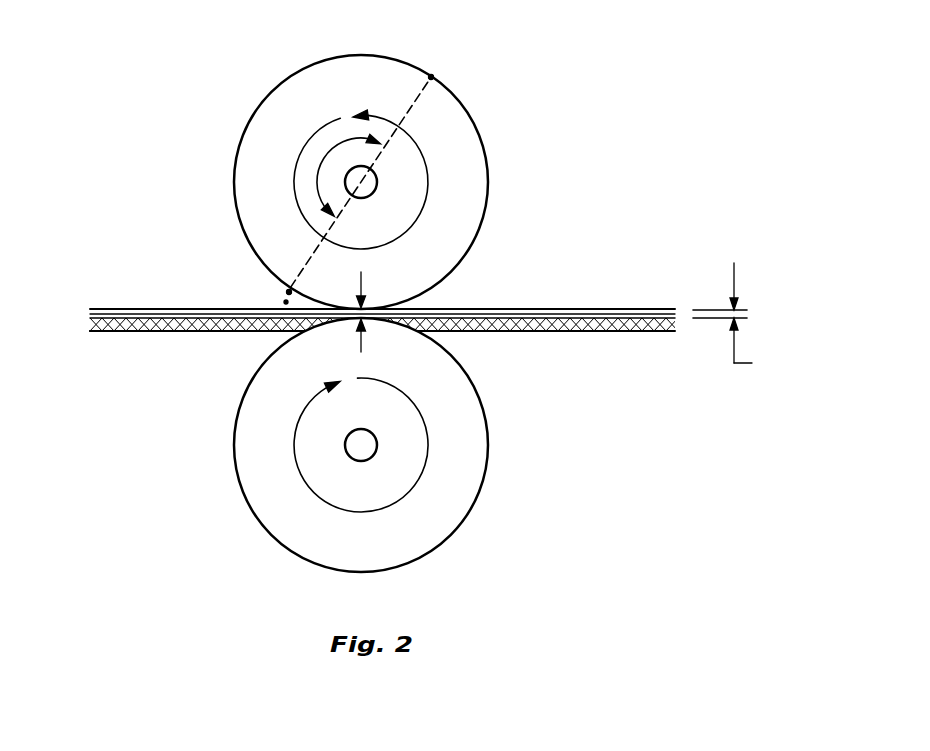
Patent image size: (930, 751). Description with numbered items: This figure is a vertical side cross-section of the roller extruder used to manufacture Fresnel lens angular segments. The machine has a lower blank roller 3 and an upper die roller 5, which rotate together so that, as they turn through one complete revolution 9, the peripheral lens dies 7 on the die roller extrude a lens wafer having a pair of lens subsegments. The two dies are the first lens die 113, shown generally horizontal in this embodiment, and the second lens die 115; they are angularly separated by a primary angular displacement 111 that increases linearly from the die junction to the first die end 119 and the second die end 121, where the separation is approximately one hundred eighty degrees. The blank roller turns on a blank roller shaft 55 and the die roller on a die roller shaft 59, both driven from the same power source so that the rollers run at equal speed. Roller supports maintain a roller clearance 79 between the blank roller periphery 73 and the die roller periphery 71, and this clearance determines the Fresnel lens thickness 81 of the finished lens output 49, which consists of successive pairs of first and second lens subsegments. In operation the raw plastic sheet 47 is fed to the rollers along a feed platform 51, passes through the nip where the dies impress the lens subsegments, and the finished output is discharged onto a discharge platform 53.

The blank roller 3 is at (463, 518).
The die roller 5 is at (467, 110).
The peripheral lens dies 7 is at (431, 77).
The complete revolution 9 is at (378, 118).
The raw plastic sheet 47 is at (133, 308).
The finished lens output 49 is at (538, 308).
The feed platform 51 is at (202, 333).
The discharge platform 53 is at (602, 331).
The blank roller shaft 55 is at (378, 444).
The die roller shaft 59 is at (377, 169).
The die roller periphery 71 is at (488, 168).
The blank roller periphery 73 is at (238, 487).
The roller clearance 79 is at (367, 285).
The Fresnel lens thickness 81 is at (741, 321).
The primary angular displacement 111 is at (328, 153).
The first lens die 113 is at (431, 77).
The second lens die 115 is at (290, 292).
The first die end 119 is at (431, 77).
The second die end 121 is at (285, 303).